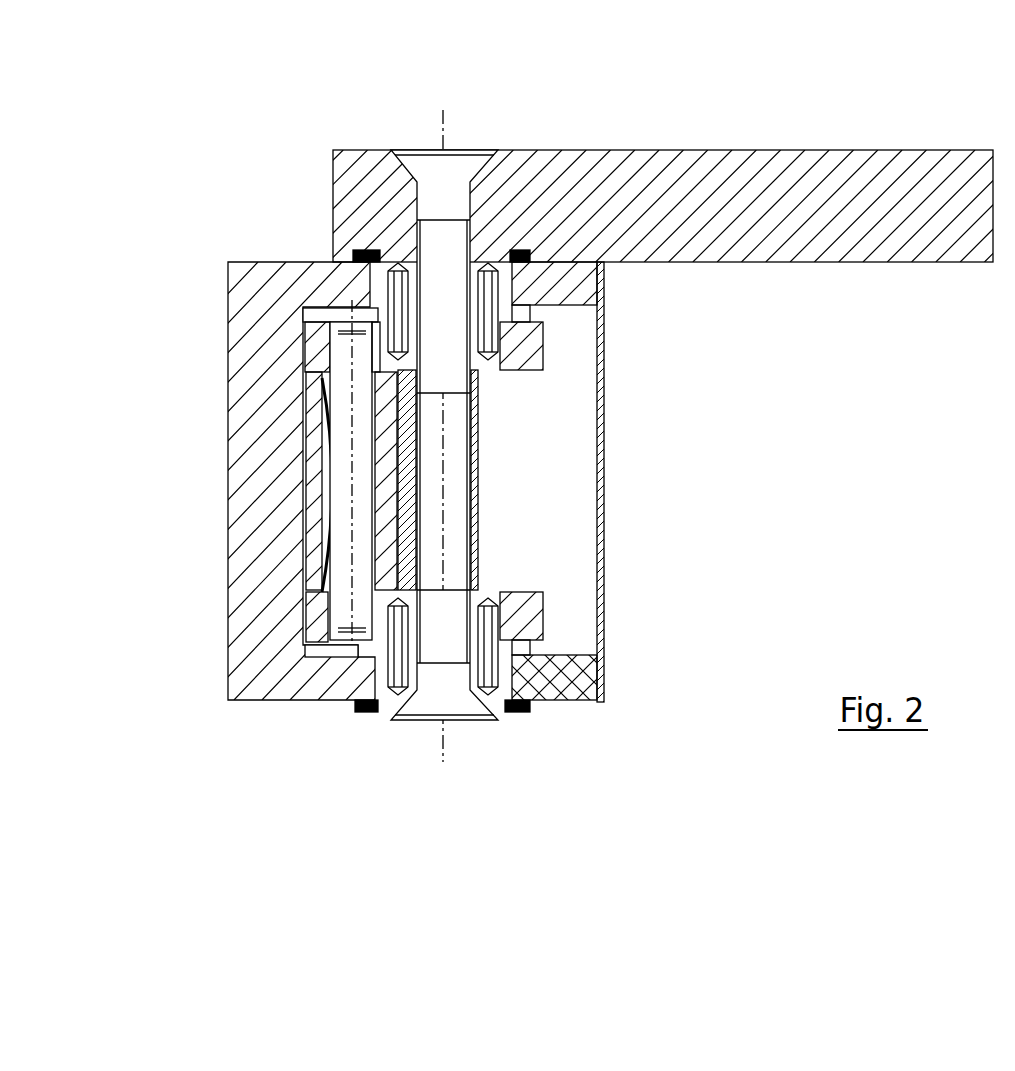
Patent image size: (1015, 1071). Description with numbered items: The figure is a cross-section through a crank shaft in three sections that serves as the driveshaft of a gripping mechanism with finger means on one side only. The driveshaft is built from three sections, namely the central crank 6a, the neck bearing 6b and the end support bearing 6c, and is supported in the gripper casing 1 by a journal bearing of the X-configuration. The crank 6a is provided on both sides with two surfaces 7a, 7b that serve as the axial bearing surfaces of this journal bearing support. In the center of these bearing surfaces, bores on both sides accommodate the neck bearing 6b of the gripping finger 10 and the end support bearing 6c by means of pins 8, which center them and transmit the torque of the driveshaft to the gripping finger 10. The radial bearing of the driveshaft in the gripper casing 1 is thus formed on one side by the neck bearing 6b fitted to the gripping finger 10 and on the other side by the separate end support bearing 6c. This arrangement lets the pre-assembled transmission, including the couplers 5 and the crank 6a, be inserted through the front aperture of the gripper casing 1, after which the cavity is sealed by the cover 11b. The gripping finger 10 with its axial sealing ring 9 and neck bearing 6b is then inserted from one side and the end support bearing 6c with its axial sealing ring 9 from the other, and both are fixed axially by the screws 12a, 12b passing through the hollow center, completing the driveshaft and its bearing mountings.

The gripper casing 1 is at (262, 541).
The couplers 5 is at (320, 415).
The crank 6a is at (474, 494).
The neck bearing 6b is at (508, 283).
The end support bearing 6c is at (375, 660).
The axial bearing surface 7a is at (528, 327).
The axial bearing surface 7b is at (578, 700).
The pins 8 is at (338, 258).
The axial sealing ring 9 is at (360, 248).
The gripping finger 10 is at (858, 170).
The cover 11b is at (606, 479).
The screw 12a is at (457, 167).
The screw 12b is at (453, 702).